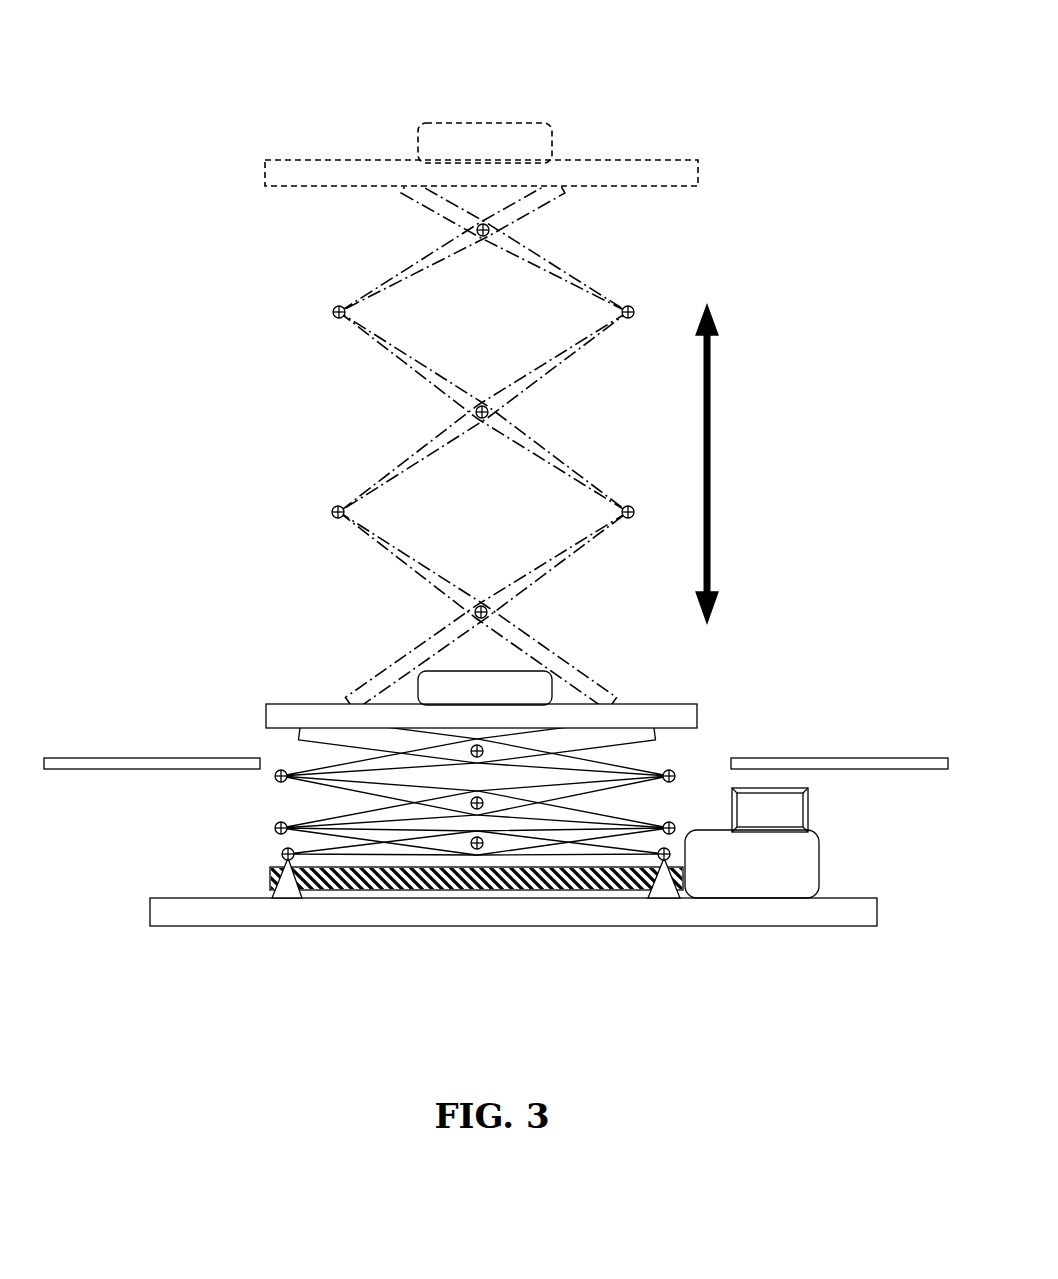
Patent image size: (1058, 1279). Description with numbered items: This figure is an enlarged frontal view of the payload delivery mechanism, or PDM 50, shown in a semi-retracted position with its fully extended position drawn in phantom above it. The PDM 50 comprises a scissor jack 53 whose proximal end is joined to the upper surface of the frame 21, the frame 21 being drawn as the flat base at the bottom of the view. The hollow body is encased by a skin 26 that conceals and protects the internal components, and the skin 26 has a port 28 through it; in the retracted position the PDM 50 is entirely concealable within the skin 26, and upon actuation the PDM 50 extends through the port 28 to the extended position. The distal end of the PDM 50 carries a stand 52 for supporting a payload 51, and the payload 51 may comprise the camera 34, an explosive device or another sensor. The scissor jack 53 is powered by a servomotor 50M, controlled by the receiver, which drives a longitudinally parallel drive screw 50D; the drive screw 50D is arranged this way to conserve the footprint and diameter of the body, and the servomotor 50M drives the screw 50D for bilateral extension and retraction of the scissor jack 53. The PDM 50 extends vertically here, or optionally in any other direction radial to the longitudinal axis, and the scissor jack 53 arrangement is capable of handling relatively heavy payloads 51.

The frame 21 is at (208, 910).
The skin 26 is at (138, 757).
The port 28 is at (667, 750).
The camera 34 is at (790, 810).
The payload delivery mechanism 50 is at (316, 405).
The drive screw 50D is at (345, 881).
The servomotor 50M is at (795, 868).
The payload 51 is at (463, 133).
The stand 52 is at (278, 172).
The scissor jack 53 is at (420, 268).